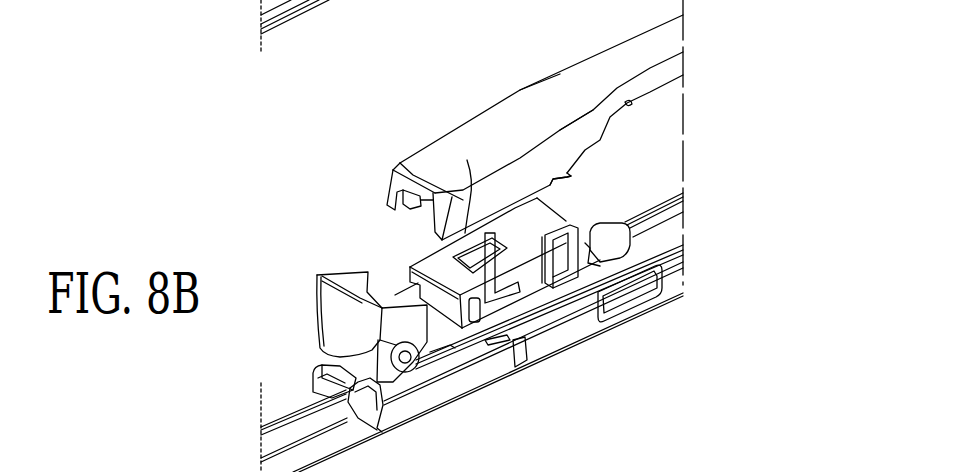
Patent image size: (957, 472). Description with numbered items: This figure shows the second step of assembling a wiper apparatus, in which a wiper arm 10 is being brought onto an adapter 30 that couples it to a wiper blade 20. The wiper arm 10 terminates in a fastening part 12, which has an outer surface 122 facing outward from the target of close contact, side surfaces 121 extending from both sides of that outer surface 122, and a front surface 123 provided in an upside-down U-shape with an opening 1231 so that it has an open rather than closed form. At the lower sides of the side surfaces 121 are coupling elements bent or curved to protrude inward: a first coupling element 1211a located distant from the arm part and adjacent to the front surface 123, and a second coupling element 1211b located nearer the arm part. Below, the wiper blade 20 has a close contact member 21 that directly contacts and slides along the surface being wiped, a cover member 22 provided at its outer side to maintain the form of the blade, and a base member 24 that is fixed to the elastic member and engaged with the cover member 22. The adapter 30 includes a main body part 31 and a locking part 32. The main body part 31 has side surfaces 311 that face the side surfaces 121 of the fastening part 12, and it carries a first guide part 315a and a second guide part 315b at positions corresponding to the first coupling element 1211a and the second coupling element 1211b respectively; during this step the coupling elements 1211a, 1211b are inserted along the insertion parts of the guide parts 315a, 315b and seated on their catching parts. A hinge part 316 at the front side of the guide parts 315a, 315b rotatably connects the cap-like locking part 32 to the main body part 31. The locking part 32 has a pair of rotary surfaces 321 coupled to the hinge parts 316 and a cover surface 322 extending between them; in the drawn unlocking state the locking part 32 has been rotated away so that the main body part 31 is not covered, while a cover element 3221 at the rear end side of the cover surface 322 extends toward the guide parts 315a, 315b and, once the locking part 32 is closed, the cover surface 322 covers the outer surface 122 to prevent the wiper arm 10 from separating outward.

The wiper arm 10 is at (693, 44).
The fastening part 12 is at (632, 57).
The side surfaces 121 is at (565, 153).
The outer surface 122 is at (517, 110).
The front surface 123 is at (415, 182).
The first coupling element 1211a is at (467, 160).
The second coupling element 1211b is at (560, 185).
The opening 1231 is at (392, 197).
The wiper blade 20 is at (693, 229).
The close contact member 21 is at (680, 260).
The cover member 22 is at (680, 210).
The base member 24 is at (442, 400).
The adapter 30 is at (388, 243).
The main body part 31 is at (587, 302).
The side surfaces 311 is at (503, 313).
The first guide part 315a is at (470, 330).
The second guide part 315b is at (562, 295).
The hinge part 316 is at (398, 412).
The locking part 32 is at (317, 285).
The rotary surfaces 321 is at (390, 357).
The cover surface 322 is at (320, 322).
The cover element 3221 is at (317, 275).